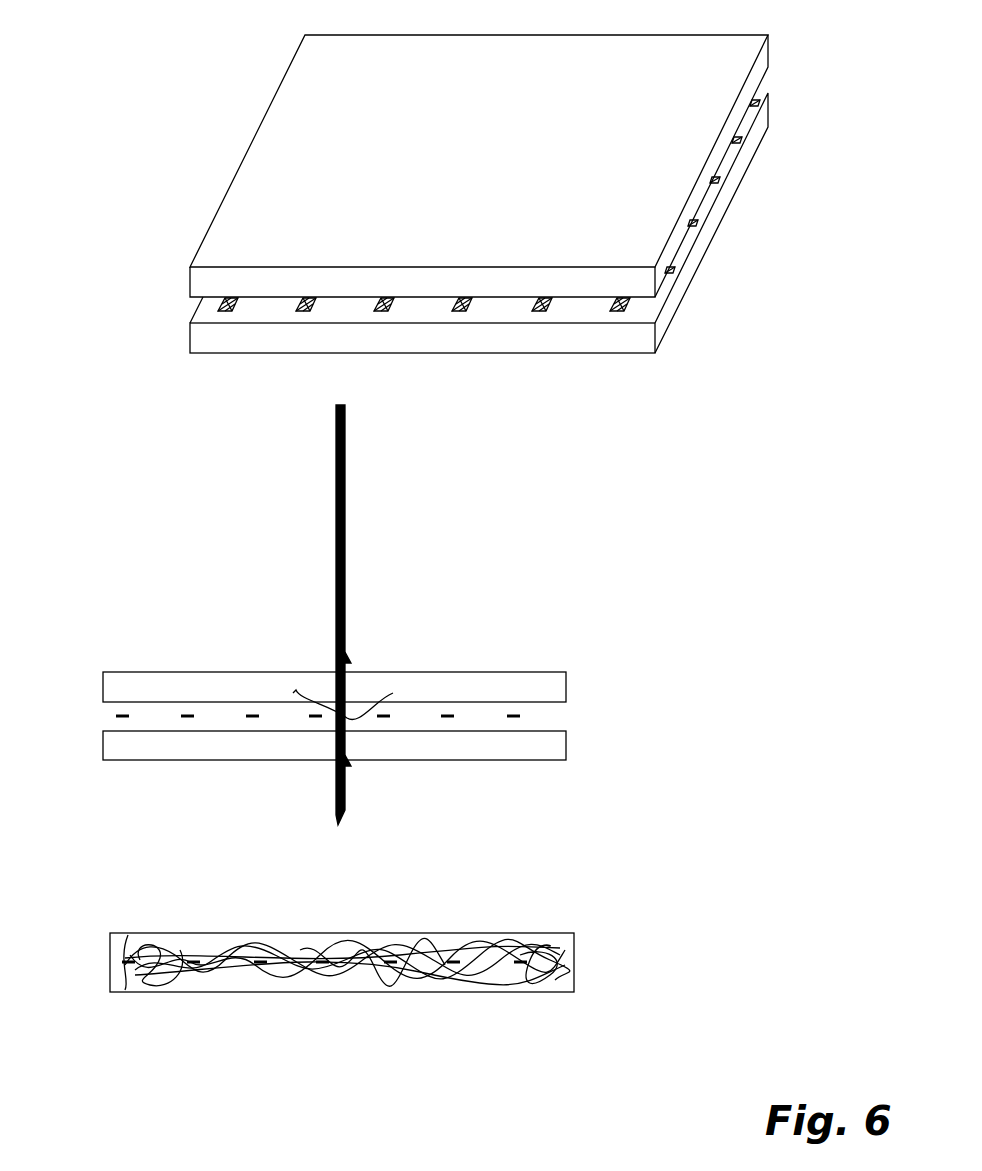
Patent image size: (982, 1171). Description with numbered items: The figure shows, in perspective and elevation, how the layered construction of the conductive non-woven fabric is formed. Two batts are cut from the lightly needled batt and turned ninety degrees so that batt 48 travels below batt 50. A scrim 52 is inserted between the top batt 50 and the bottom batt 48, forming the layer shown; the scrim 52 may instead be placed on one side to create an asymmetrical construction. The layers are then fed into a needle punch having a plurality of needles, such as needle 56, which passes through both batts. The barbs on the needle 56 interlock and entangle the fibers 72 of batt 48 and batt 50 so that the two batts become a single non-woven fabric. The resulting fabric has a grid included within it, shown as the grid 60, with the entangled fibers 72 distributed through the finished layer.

The batt 48 is at (764, 122).
The batt 50 is at (767, 43).
The scrim 52 is at (735, 142).
The needle 56 is at (345, 533).
The grid included within the fabric 60 is at (80, 962).
The fibers 72 is at (400, 978).